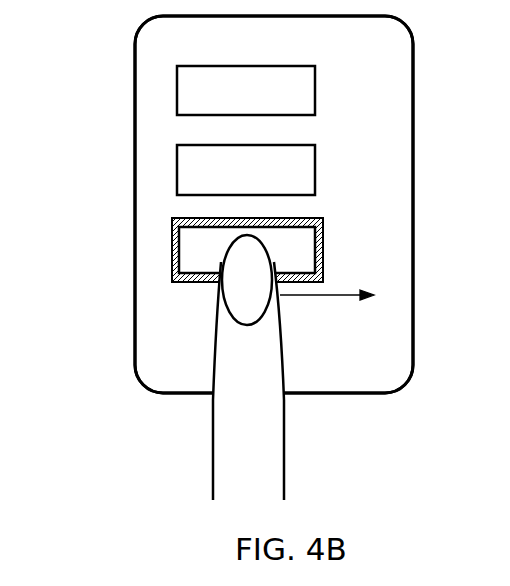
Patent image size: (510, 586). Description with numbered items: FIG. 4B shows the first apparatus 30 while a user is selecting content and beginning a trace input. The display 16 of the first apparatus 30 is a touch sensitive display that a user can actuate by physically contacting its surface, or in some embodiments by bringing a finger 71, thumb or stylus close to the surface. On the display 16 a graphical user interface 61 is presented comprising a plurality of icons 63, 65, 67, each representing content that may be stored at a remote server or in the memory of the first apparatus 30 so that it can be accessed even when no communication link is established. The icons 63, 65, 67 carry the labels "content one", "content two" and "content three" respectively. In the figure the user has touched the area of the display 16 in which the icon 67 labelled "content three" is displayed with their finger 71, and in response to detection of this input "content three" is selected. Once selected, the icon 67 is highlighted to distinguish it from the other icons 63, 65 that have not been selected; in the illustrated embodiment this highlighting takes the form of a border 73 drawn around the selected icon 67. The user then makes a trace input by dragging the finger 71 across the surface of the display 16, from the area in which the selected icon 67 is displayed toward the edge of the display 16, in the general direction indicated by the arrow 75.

The display 16 is at (413, 70).
The first apparatus 30 is at (82, 153).
The graphical user interface 61 is at (413, 235).
The icon 63 is at (315, 90).
The icon 65 is at (315, 168).
The icon 67 is at (323, 248).
The finger 71 is at (284, 467).
The border 73 is at (177, 283).
The arrow 75 is at (345, 298).